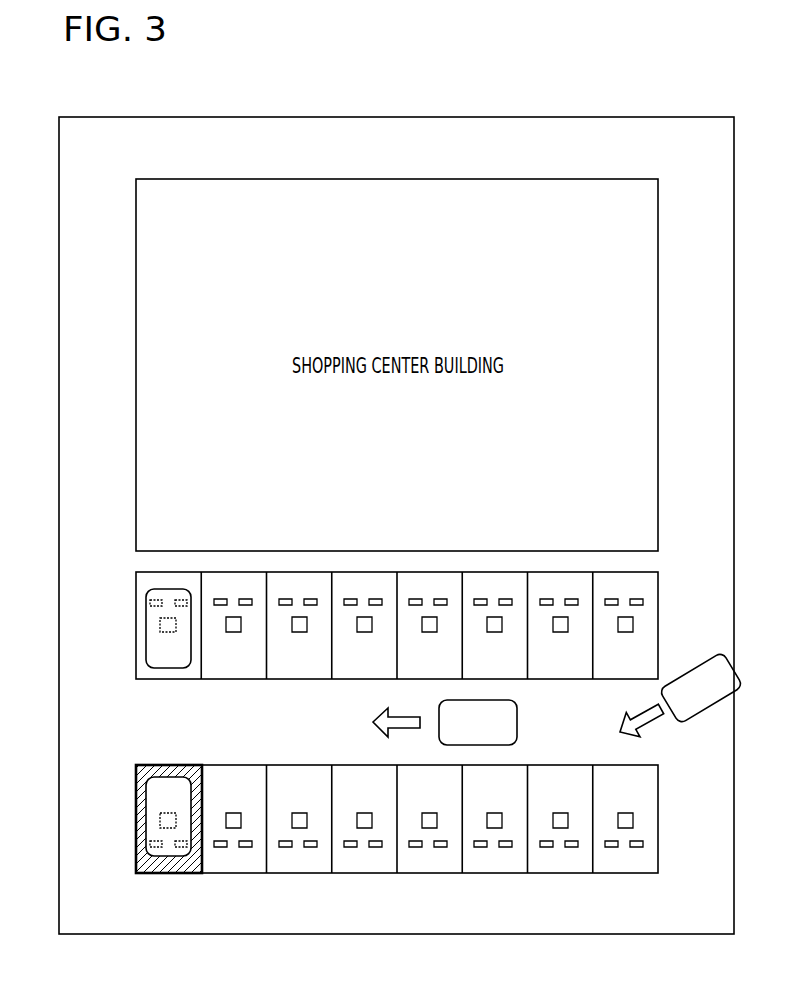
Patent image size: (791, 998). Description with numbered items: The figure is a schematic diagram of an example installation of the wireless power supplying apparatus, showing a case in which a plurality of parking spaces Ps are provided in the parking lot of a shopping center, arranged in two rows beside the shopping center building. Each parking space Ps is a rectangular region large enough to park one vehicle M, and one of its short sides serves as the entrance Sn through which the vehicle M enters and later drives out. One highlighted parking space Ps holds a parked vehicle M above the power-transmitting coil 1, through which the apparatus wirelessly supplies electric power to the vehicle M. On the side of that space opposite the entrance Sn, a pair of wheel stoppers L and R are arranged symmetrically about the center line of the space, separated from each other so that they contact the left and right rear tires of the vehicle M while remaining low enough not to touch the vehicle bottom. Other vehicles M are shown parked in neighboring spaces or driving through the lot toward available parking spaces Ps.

The vehicle M is at (146, 619).
The entrance Sn is at (146, 764).
The parking space Ps is at (136, 787).
The power-transmitting coil 1 is at (160, 820).
The wheel stopper L is at (152, 875).
The wheel stopper R is at (183, 875).